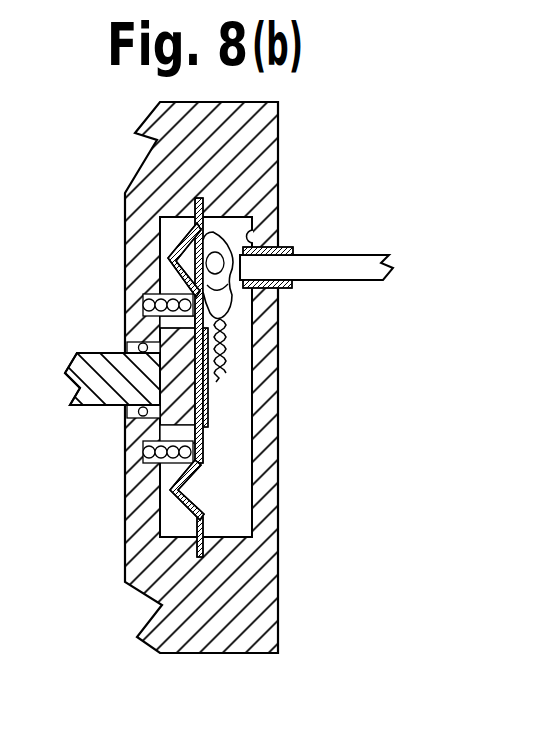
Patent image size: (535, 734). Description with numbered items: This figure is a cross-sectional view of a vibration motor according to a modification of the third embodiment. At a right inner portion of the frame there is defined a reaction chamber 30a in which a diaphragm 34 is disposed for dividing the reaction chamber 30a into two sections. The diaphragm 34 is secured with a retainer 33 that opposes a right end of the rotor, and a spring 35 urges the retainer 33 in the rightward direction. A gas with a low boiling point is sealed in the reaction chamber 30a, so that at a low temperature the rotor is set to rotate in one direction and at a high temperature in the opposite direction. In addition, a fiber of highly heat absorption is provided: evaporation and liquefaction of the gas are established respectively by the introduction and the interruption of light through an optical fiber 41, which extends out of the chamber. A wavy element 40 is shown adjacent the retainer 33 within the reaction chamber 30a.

The protrusion of housing 30a is at (250, 236).
The plate 33 is at (198, 390).
The leaf spring 34 is at (185, 489).
The bearing 35 is at (128, 462).
The spring wire 40 is at (215, 322).
The shaft 41 is at (332, 272).